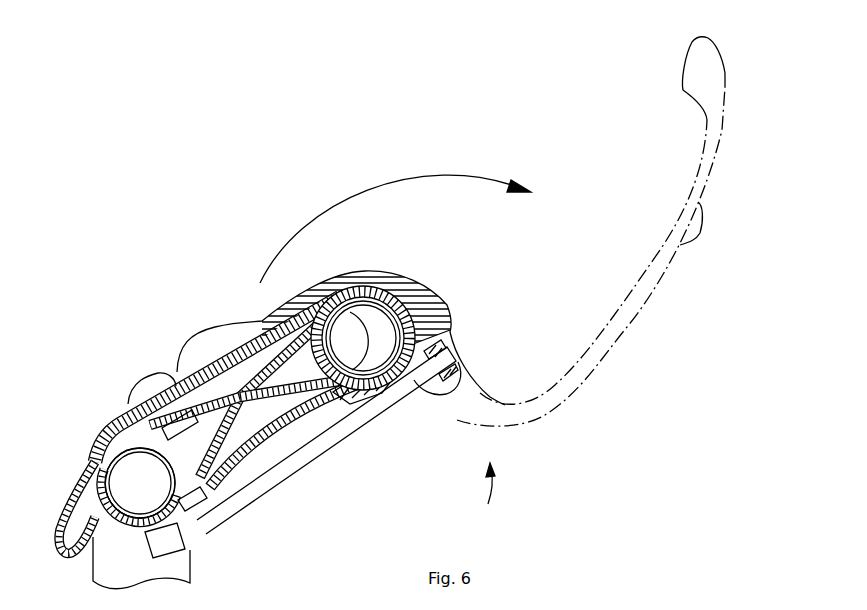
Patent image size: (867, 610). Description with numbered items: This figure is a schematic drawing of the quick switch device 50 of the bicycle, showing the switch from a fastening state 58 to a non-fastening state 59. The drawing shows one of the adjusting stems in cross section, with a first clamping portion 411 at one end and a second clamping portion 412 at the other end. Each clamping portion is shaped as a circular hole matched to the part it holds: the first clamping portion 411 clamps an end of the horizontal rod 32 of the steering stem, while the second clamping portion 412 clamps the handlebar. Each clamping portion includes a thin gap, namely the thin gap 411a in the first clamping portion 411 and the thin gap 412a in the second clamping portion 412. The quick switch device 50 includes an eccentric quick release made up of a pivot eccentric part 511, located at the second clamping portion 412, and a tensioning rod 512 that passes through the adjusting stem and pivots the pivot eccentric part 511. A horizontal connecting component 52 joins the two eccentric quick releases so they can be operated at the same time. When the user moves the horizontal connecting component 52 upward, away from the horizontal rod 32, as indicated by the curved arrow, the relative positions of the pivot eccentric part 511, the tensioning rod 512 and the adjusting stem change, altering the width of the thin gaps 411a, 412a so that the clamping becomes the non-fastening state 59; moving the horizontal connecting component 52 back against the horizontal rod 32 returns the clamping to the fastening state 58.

The horizontal rod 32 is at (128, 493).
The quick switch device 50 is at (258, 319).
The horizontal connecting component 52 is at (120, 399).
The fastening state 58 is at (140, 286).
The non-fastening state 59 is at (752, 103).
The first clamping portion 411 is at (183, 506).
The thin gap 411a is at (180, 522).
The second clamping portion 412 is at (398, 304).
The thin gap 412a is at (382, 394).
The pivot eccentric part 511 is at (443, 317).
The tensioning rod 512 is at (270, 477).